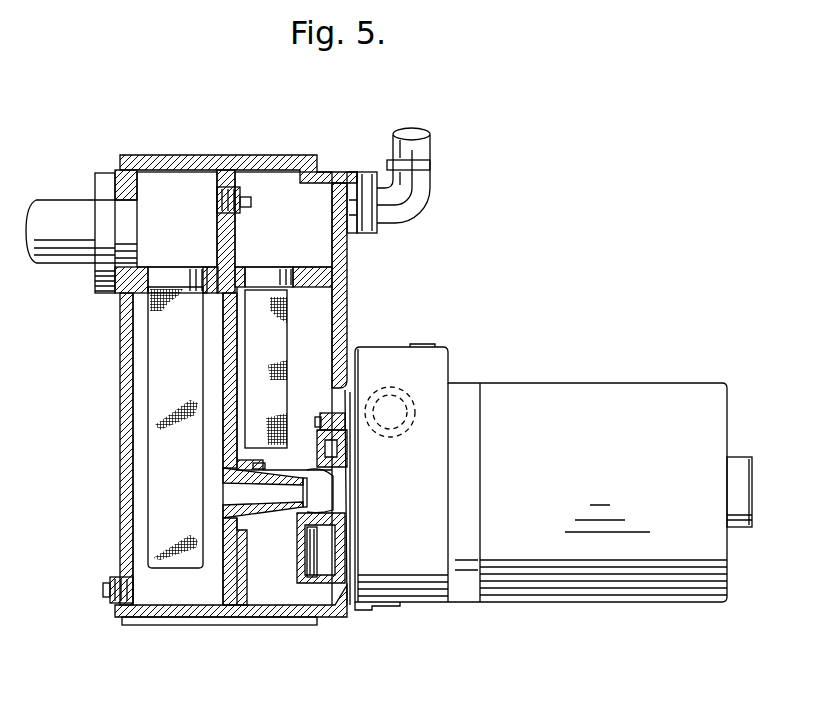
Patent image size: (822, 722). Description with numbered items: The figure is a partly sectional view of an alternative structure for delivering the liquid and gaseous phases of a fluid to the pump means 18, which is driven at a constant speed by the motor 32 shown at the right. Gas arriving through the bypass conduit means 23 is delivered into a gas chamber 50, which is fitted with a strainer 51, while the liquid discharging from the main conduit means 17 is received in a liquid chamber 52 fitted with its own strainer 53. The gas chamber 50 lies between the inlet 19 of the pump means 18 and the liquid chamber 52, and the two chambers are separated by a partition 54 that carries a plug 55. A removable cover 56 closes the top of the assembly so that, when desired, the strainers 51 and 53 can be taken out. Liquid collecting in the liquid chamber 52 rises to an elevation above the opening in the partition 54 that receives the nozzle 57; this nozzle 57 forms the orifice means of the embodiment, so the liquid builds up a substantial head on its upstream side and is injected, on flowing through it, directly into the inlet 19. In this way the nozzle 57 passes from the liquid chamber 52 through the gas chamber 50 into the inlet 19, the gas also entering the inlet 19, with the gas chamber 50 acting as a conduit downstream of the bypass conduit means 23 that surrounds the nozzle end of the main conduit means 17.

The main conduit means 17 is at (72, 268).
The pump means 18 is at (386, 610).
The inlet 19 is at (329, 508).
The bypass conduit means 23 is at (430, 150).
The motor 32 is at (592, 480).
The gas chamber 50 is at (320, 333).
The strainer 51 is at (275, 353).
The liquid chamber 52 is at (186, 598).
The strainer 53 is at (186, 466).
The partition 54 is at (233, 240).
The plug 55 is at (253, 200).
The removable cover 56 is at (201, 156).
The nozzle 57 is at (288, 513).